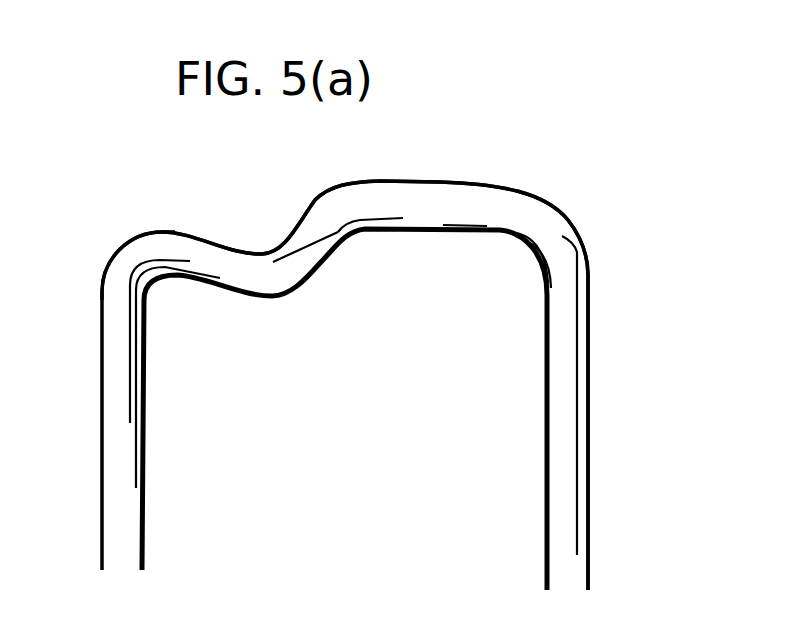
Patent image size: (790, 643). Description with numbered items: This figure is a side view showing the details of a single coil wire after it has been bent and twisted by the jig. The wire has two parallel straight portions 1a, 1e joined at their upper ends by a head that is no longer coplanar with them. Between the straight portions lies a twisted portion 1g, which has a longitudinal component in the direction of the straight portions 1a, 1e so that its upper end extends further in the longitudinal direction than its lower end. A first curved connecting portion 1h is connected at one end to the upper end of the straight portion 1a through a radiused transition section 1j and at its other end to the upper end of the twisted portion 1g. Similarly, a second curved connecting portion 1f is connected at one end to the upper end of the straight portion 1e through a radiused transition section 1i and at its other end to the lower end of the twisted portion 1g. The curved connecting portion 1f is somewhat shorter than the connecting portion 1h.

The straight portion 1a is at (563, 507).
The straight portion 1e is at (113, 407).
The second curved connecting portion 1f is at (208, 255).
The twisted portion 1g is at (274, 287).
The first curved connecting portion 1h is at (445, 200).
The radiused transition section 1i is at (120, 268).
The radiused transition section 1j is at (560, 250).